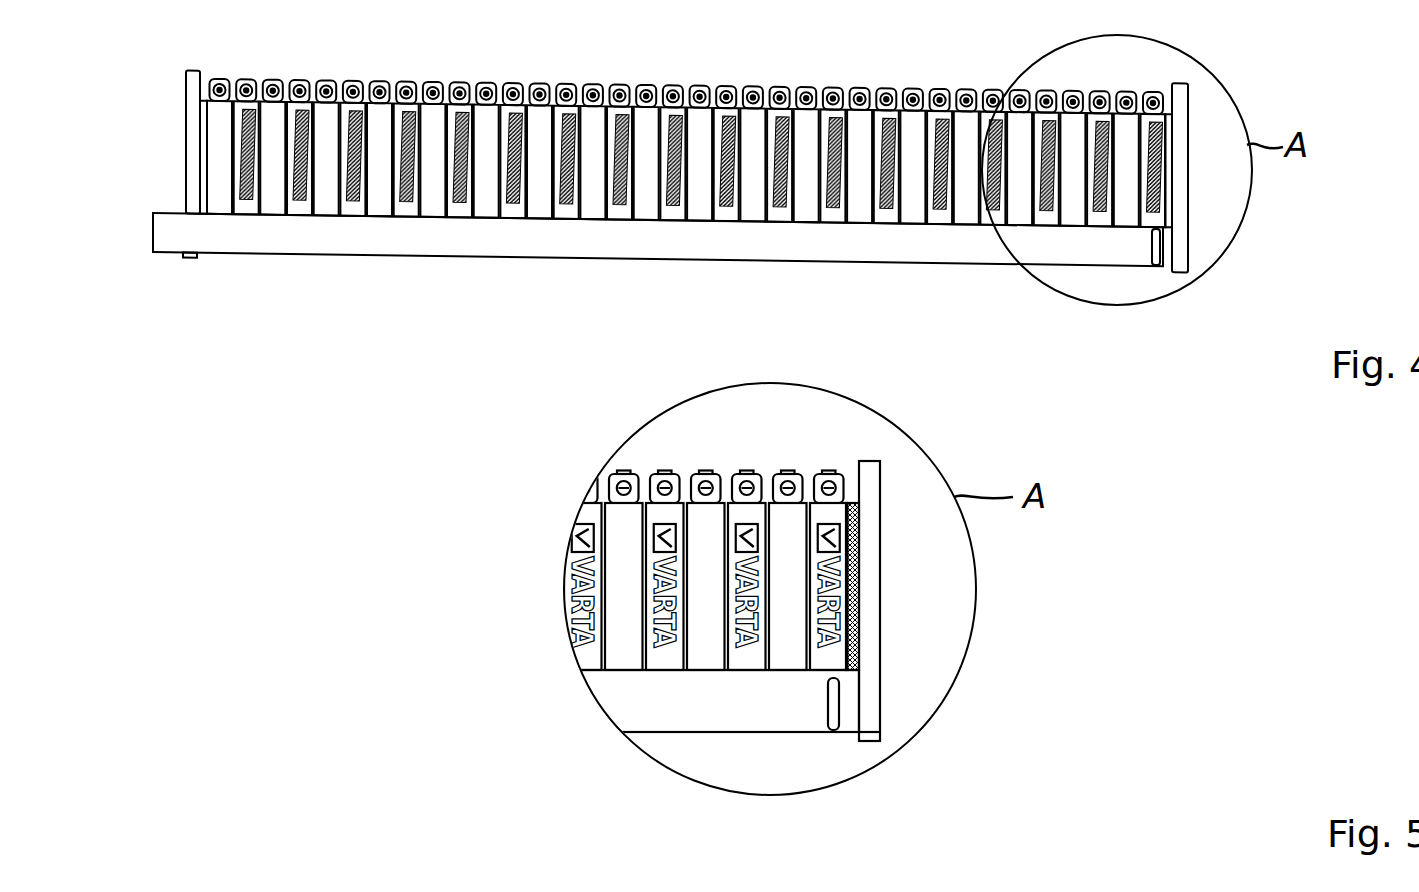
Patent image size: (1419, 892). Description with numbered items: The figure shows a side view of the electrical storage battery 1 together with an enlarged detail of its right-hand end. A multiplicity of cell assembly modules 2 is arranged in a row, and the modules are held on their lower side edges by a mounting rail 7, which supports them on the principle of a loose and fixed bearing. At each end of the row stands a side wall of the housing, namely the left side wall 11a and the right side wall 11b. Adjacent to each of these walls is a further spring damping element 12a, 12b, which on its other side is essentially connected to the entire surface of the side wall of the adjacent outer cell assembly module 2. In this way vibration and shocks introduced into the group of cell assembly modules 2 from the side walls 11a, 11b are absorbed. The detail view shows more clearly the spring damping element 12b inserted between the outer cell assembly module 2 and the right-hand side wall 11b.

In FIG. 4, the electrical storage battery 1 is at (728, 175).
In FIG. 4, the cell assembly module 2 is at (487, 193).
In FIG. 5, the cell assembly module 2 is at (822, 508).
In FIG. 4, the mounting rail 7 is at (282, 237).
In FIG. 4, the left side wall 11a is at (188, 136).
In FIG. 4, the right side wall 11b is at (1181, 197).
In FIG. 5, the right side wall 11b is at (870, 461).
In FIG. 4, the spring damping element 12a is at (203, 170).
In FIG. 4, the spring damping element 12b is at (1167, 127).
In FIG. 5, the spring damping element 12b is at (852, 502).